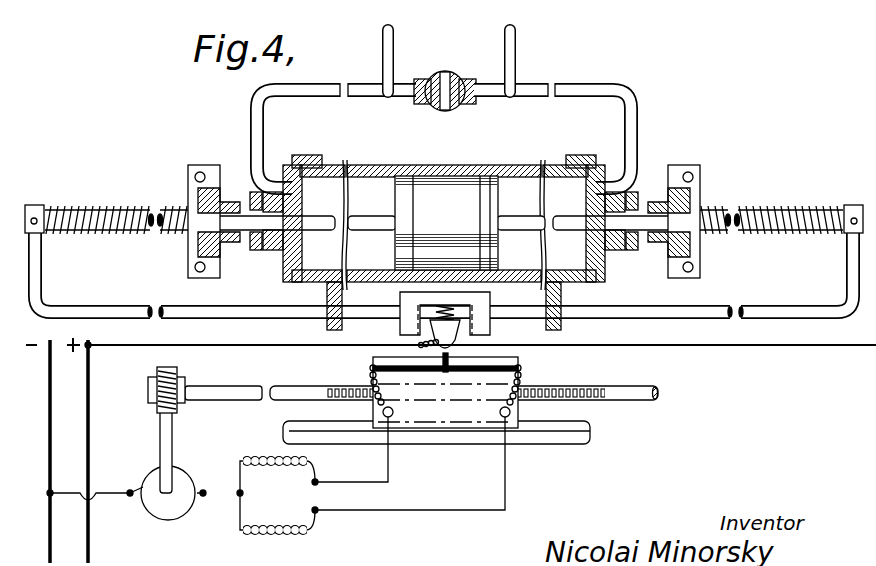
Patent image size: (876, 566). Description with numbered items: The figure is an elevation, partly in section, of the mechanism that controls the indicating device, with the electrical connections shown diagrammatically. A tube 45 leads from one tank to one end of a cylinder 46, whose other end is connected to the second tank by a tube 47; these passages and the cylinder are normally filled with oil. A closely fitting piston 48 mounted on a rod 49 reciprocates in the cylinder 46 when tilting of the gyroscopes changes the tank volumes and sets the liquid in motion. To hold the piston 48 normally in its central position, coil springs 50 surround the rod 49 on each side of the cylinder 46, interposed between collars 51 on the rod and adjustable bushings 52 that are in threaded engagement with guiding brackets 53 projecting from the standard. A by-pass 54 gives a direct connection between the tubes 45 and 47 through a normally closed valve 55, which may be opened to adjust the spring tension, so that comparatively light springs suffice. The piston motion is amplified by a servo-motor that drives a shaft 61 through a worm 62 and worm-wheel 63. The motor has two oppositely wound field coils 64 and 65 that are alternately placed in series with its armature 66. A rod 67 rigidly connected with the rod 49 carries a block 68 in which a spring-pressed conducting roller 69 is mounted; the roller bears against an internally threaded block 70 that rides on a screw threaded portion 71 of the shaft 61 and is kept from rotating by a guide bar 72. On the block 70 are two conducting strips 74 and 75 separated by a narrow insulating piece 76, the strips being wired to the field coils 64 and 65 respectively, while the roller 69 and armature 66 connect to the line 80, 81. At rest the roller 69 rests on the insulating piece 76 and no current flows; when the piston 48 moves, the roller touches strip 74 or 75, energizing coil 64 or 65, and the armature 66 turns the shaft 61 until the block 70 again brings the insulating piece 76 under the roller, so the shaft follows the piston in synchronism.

The tube 45 is at (305, 88).
The cylinder 46 is at (357, 180).
The tube 47 is at (527, 90).
The piston 48 is at (453, 187).
The rod 49 is at (243, 220).
The coil springs 50 is at (93, 208).
The collars 51 is at (45, 195).
The adjustable bushings 52 is at (198, 193).
The guiding brackets 53 is at (193, 167).
The by-pass 54 is at (400, 88).
The valve 55 is at (458, 72).
The shaft 61 is at (208, 400).
The worm 62 is at (160, 402).
The worm-wheel 63 is at (178, 372).
The field coil 64 is at (263, 455).
The field coil 65 is at (260, 536).
The armature 66 is at (153, 503).
The rod 67 is at (88, 313).
The block 68 is at (483, 305).
The roller 69 is at (453, 350).
The block 70 is at (500, 415).
The screw threaded portion 71 is at (587, 386).
The guide bar 72 is at (577, 441).
The strip of conducting material 74 is at (370, 360).
The strip of conducting material 75 is at (503, 362).
The insulating piece 76 is at (438, 363).
The line 80 is at (88, 387).
The line 81 is at (50, 395).